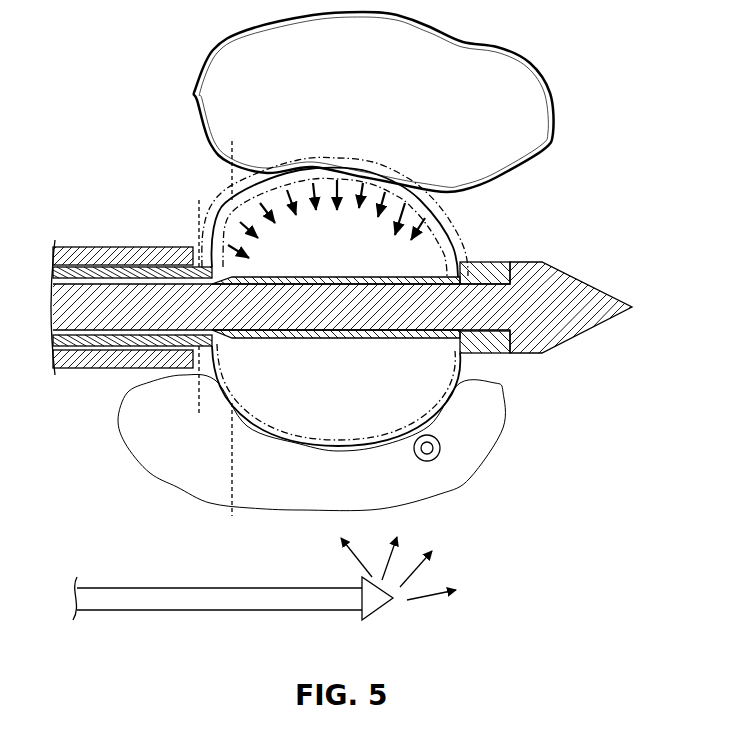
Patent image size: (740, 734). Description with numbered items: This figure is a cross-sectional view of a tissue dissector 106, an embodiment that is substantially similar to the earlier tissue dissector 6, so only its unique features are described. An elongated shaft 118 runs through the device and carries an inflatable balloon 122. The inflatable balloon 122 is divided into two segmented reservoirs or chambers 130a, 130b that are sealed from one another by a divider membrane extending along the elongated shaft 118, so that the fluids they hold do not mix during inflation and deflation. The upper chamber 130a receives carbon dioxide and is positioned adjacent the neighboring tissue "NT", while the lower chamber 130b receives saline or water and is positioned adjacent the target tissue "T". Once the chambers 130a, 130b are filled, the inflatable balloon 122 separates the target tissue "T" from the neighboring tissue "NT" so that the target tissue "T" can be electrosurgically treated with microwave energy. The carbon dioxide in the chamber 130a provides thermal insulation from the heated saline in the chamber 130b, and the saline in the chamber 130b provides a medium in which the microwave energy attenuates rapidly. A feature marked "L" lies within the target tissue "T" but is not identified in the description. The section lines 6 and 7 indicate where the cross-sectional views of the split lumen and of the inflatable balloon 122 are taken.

The tissue dissector 106 is at (571, 243).
The elongated shaft 118 is at (421, 260).
The inflatable balloon 122 is at (463, 358).
The chamber 130a is at (410, 240).
The chamber 130b is at (426, 384).
The tissue dissector 6 is at (199, 200).
The section line 7- 7 is at (232, 141).
The neighboring tissue NT is at (513, 53).
The target tissue T is at (440, 450).
The lesion L is at (500, 424).